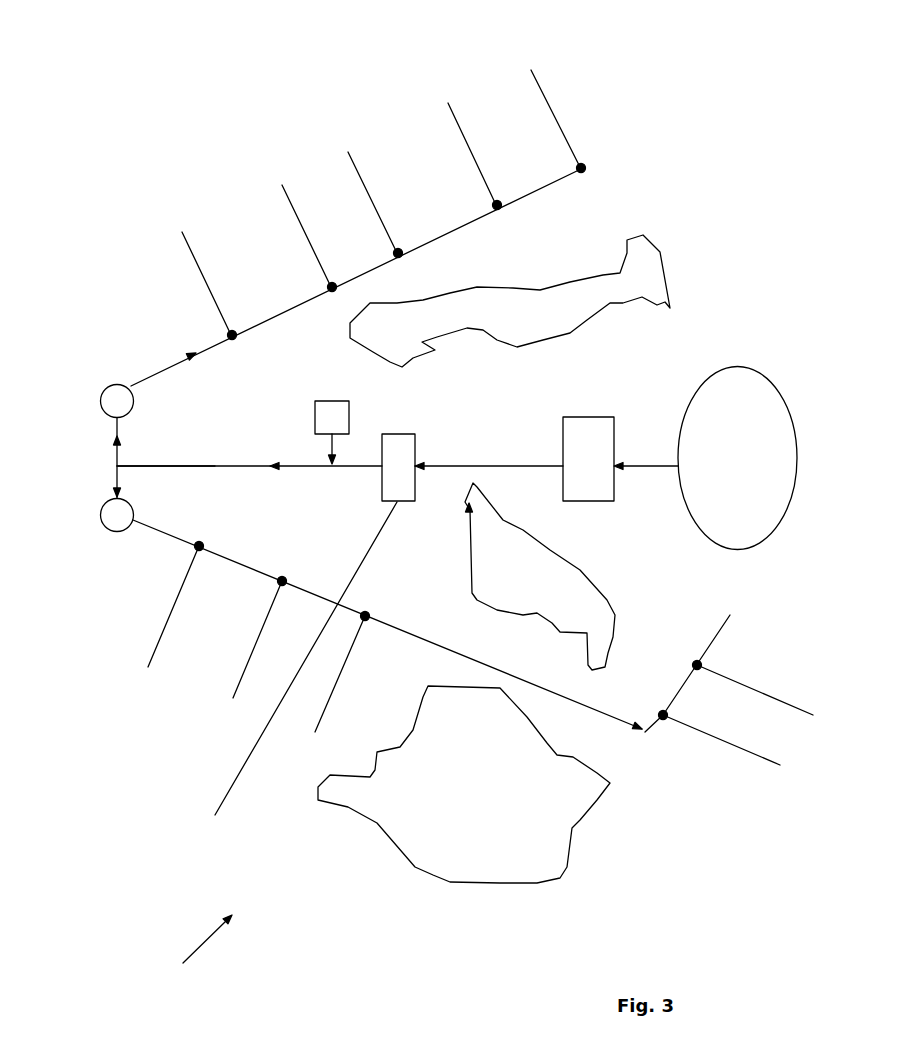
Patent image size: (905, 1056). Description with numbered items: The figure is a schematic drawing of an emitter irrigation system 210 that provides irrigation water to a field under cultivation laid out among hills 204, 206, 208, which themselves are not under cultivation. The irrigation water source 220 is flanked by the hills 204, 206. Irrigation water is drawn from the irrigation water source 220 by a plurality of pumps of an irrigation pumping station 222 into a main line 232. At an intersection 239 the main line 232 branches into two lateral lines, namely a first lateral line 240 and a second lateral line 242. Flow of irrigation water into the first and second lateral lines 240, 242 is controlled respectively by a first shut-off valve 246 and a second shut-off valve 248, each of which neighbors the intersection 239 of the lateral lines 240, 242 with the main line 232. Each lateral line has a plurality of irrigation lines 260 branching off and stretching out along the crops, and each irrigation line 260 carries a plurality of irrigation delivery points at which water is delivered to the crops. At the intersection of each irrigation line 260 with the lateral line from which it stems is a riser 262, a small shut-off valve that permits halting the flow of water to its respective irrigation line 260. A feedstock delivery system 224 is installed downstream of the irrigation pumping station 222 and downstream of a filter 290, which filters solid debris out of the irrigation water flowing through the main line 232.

The hill 204 is at (663, 253).
The hill 206 is at (540, 576).
The hill 208 is at (415, 865).
The emitter irrigation system 210 is at (190, 955).
The irrigation water source 220 is at (797, 435).
The irrigation pumping station 222 is at (590, 417).
The feedstock delivery system 224 is at (328, 400).
The main line 232 is at (215, 466).
The intersection 239 is at (117, 466).
The first lateral line 240 is at (548, 186).
The second lateral line 242 is at (167, 534).
The first shut-off valve 246 is at (100, 399).
The second shut-off valve 248 is at (102, 524).
The irrigation line 260 is at (547, 103).
The riser 262 is at (332, 287).
The filter 290 is at (288, 675).